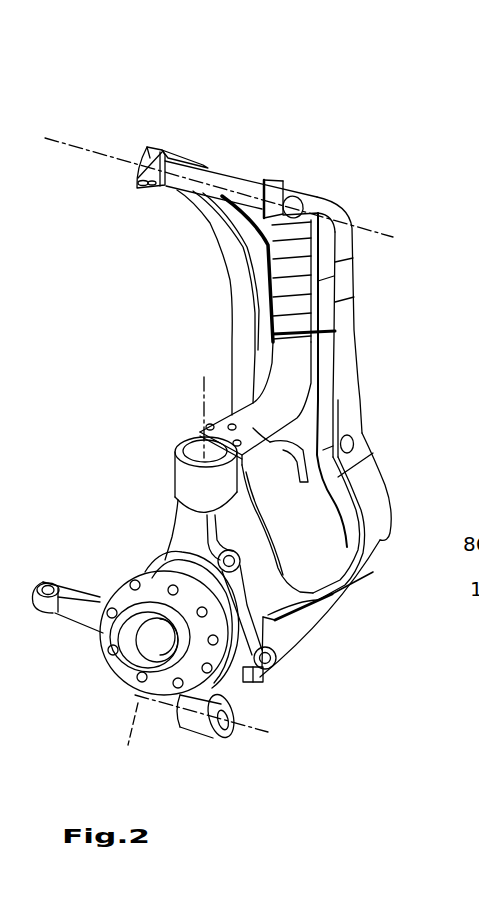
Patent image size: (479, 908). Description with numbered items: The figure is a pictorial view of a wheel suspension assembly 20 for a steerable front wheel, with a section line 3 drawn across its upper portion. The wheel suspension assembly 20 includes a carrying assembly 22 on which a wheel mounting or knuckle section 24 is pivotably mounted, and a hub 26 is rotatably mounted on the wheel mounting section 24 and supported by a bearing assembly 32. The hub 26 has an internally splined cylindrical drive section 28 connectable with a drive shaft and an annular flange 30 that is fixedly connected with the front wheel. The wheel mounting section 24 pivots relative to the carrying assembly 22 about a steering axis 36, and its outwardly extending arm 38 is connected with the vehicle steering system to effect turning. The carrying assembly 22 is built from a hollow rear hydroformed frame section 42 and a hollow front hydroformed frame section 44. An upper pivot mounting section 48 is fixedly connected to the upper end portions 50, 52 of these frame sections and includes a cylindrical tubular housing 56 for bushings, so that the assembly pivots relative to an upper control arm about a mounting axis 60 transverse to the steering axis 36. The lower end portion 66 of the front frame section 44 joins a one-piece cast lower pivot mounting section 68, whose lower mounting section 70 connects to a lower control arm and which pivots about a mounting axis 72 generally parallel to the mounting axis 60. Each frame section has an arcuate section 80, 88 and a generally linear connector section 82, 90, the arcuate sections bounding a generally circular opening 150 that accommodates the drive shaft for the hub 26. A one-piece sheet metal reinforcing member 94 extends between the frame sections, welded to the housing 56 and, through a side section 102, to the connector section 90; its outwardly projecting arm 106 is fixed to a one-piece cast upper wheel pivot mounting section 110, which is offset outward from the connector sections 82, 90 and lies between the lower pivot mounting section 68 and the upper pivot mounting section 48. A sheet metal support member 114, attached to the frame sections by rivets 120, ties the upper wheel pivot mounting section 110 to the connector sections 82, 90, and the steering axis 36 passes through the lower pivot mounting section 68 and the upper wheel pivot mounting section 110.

The section line 3- 3 is at (243, 124).
The wheel suspension assembly 20 is at (281, 67).
The carrying assembly 22 is at (362, 348).
The wheel mounting section 24 is at (292, 630).
The hub 26 is at (108, 657).
The cylindrical drive section 28 is at (138, 657).
The annular flange 30 is at (122, 593).
The bearing assembly 32 is at (165, 561).
The steering axis 36 is at (200, 400).
The outwardly extending arm 38 is at (48, 586).
The rear hydroformed frame section 42 is at (223, 249).
The front hydroformed frame section 44 is at (323, 395).
The upper pivot mounting section 48 is at (243, 169).
The upper end portion 50 is at (176, 155).
The upper end portion 52 is at (313, 192).
The cylindrical tubular housing 56 is at (173, 189).
The mounting axis 60 is at (108, 158).
The lower end portion 66 is at (262, 677).
The lower pivot mounting section 68 is at (205, 735).
The lower mounting section 70 is at (227, 733).
The mounting axis 72 is at (188, 732).
The arcuate section 80 is at (230, 533).
The connector section 82 is at (247, 313).
The arcuate section 88 is at (377, 512).
The connector section 90 is at (338, 312).
The reinforcing member 94 is at (274, 355).
The side section 102 is at (311, 280).
The arm 106 is at (302, 478).
The upper wheel pivot mounting section 110 is at (192, 485).
The support member 114 is at (324, 452).
The rivets 120 is at (354, 443).
The opening 150 is at (305, 572).